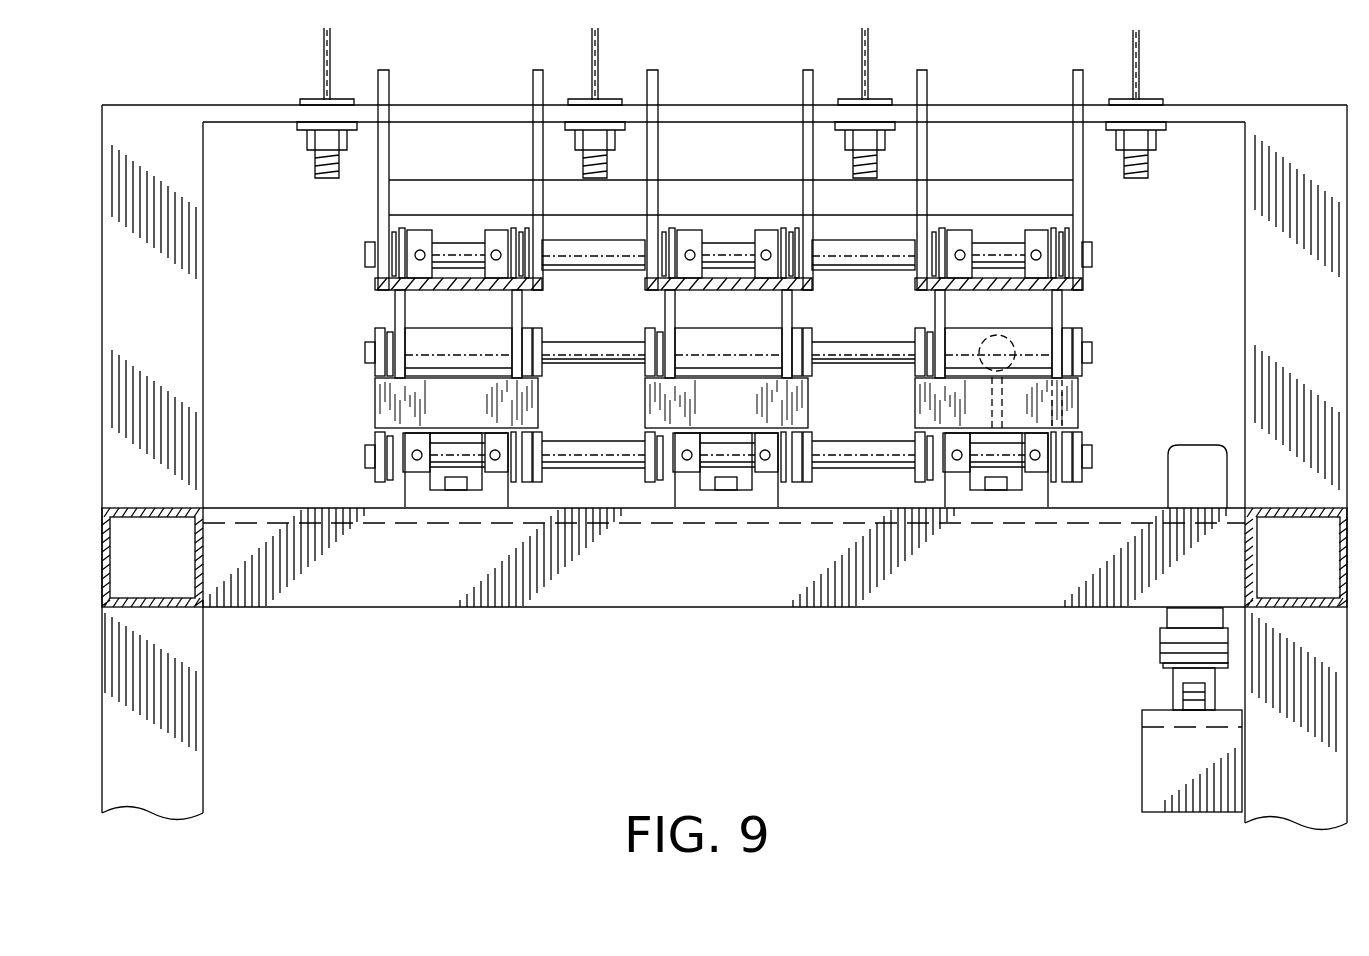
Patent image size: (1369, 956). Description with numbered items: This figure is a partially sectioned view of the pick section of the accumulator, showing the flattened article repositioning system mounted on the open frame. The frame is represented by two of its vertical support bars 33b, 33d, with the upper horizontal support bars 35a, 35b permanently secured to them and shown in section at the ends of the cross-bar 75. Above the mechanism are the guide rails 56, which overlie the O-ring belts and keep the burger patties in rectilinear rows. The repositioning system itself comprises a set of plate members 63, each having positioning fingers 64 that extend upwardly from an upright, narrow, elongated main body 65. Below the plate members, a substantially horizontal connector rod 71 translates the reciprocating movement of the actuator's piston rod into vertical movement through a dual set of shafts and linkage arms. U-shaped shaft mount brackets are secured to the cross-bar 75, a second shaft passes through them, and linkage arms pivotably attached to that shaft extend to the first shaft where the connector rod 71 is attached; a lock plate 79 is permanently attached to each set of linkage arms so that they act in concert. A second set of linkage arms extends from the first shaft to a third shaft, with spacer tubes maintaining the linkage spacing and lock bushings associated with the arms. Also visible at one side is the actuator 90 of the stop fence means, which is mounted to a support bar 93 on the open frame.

The vertical support bar 33b is at (1278, 332).
The vertical support bar 33d is at (130, 339).
The upper horizontal support bar 35a is at (1271, 571).
The upper horizontal support bar 35b is at (130, 572).
The guide rail 56 is at (1132, 55).
The plate member 63 is at (806, 135).
The positioning finger 64 is at (808, 92).
The main body 65 is at (535, 195).
The connector rod 71 is at (1059, 360).
The cross-bar 75 is at (660, 584).
The lock plate 79 is at (1097, 411).
The actuator 90 is at (1180, 494).
The support bar 93 is at (1165, 757).